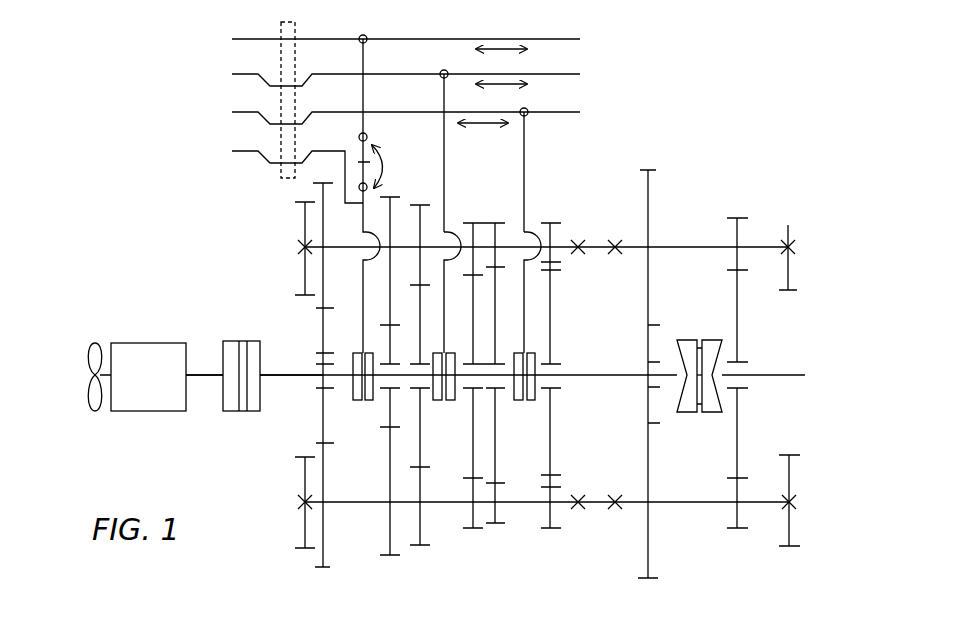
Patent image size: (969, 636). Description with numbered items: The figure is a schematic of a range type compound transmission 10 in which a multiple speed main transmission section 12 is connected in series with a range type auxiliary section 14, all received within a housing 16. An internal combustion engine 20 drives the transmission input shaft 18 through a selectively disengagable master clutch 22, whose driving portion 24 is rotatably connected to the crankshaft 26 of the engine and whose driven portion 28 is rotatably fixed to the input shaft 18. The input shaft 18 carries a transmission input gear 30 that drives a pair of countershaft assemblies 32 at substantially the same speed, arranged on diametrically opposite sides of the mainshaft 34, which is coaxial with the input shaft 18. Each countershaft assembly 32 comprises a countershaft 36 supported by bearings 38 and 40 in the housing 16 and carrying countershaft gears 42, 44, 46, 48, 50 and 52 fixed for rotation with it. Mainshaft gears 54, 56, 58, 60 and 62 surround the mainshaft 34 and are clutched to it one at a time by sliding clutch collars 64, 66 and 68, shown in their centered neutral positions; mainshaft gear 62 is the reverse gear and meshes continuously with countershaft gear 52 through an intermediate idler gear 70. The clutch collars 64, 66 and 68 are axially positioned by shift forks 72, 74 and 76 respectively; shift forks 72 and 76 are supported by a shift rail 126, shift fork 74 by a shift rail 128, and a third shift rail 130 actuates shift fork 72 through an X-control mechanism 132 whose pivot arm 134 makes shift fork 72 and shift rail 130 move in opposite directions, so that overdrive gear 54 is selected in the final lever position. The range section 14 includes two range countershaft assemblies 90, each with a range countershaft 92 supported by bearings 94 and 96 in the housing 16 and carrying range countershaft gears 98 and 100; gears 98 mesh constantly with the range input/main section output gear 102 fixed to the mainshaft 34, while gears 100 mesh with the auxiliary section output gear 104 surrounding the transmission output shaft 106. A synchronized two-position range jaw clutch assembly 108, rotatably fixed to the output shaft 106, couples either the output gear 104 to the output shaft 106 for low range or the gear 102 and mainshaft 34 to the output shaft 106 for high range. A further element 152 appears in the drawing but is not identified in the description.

The range type compound transmission 10 is at (601, 173).
The main transmission section 12 is at (230, 251).
The range type auxiliary section 14 is at (672, 198).
The housing 16 is at (303, 220).
The transmission input shaft 18 is at (293, 373).
The internal combustion engine 20 is at (148, 412).
The master clutch 22 is at (243, 339).
The driving portion 24 is at (232, 412).
The crankshaft 26 is at (207, 374).
The driven portion 28 is at (252, 412).
The transmission input gear 30 is at (326, 352).
The countershaft assemblies 32 is at (567, 239).
The mainshaft 34 is at (585, 375).
The countershaft 36 is at (347, 250).
The bearing 38 is at (303, 244).
The bearing 40 is at (578, 240).
The countershaft gear 42 is at (322, 562).
The countershaft gear 44 is at (389, 541).
The countershaft gear 46 is at (423, 528).
The countershaft gear 48 is at (462, 520).
The countershaft gear 50 is at (497, 508).
The countershaft gear 52 is at (556, 520).
The mainshaft gear 54 is at (389, 412).
The mainshaft gear 56 is at (446, 390).
The mainshaft gear 58 is at (469, 452).
The mainshaft gear 60 is at (527, 392).
The reverse mainshaft gear 62 is at (549, 432).
The clutch collar 64 is at (358, 401).
The clutch collar 66 is at (437, 352).
The clutch collar 68 is at (516, 352).
The intermediate idler gear 70 is at (552, 482).
The shift fork 72 is at (366, 308).
The shift fork 74 is at (445, 145).
The shift fork 76 is at (525, 132).
The range countershaft assemblies 90 is at (707, 244).
The range countershaft 92 is at (670, 248).
The bearing 94 is at (616, 240).
The bearing 96 is at (795, 243).
The range countershaft gear 98 is at (649, 190).
The range countershaft gear 100 is at (740, 237).
The range input/main section output gear 102 is at (650, 345).
The auxiliary section output gear 104 is at (737, 338).
The transmission output shaft 106 is at (783, 372).
The synchronized two-position range jaw clutch assembly 108 is at (714, 417).
The shift rail 126 is at (573, 111).
The shift rail 128 is at (568, 73).
The third shift rail 130 is at (568, 38).
The X-control mechanism 132 is at (359, 138).
The pivot arm 134 is at (385, 166).
The shift actuator 152 is at (277, 98).